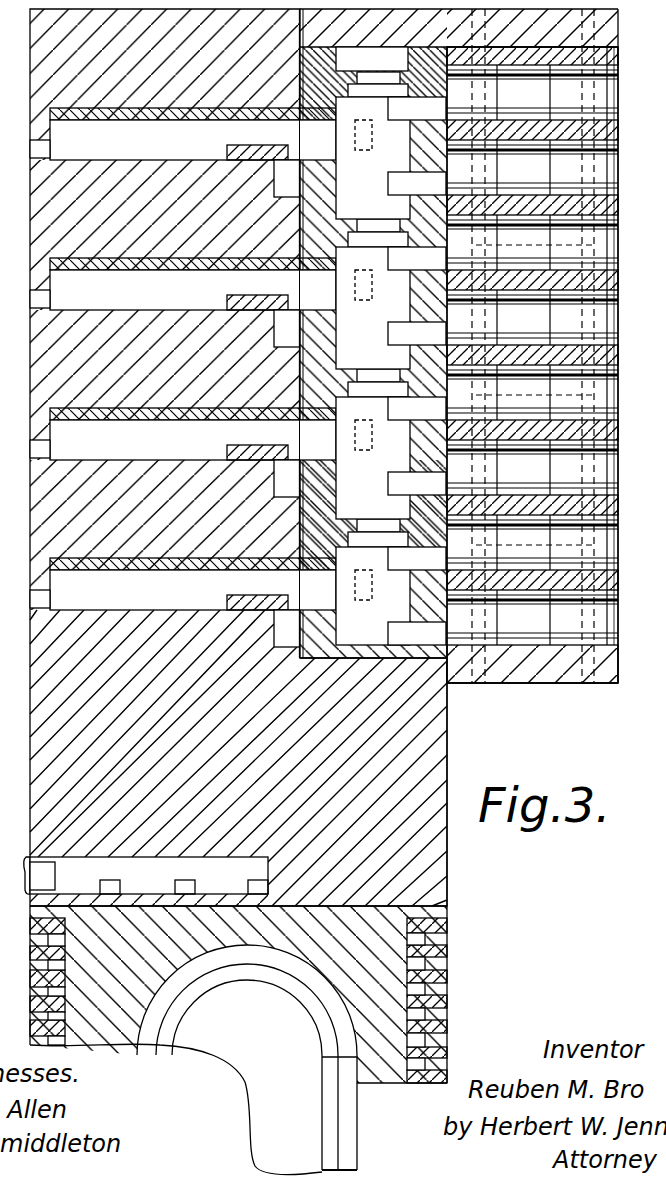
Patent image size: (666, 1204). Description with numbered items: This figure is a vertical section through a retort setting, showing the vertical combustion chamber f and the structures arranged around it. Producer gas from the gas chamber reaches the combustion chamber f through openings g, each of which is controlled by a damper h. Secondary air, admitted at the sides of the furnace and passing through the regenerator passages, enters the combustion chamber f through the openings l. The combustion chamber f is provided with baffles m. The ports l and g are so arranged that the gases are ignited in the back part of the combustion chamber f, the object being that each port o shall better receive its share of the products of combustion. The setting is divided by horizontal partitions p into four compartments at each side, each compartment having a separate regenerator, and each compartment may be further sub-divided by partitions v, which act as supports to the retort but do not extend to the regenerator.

The damper h is at (227, 151).
The opening g is at (287, 403).
The opening l is at (373, 371).
The combustion chamber f is at (380, 144).
The baffle m is at (363, 227).
The port o is at (390, 646).
The partition v is at (620, 130).
The horizontal partition p is at (610, 208).